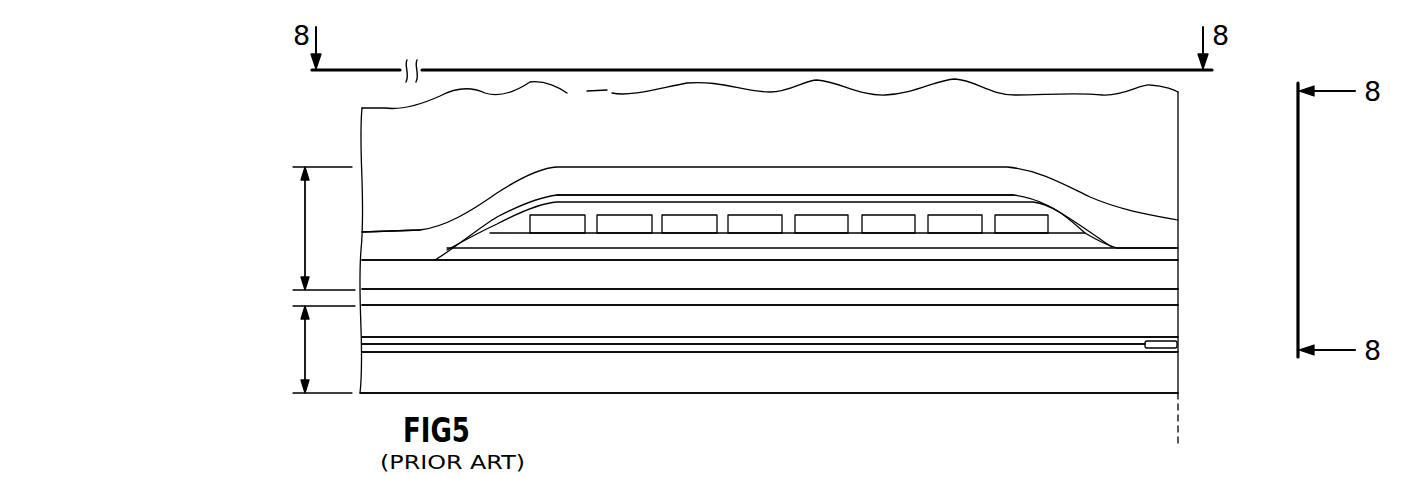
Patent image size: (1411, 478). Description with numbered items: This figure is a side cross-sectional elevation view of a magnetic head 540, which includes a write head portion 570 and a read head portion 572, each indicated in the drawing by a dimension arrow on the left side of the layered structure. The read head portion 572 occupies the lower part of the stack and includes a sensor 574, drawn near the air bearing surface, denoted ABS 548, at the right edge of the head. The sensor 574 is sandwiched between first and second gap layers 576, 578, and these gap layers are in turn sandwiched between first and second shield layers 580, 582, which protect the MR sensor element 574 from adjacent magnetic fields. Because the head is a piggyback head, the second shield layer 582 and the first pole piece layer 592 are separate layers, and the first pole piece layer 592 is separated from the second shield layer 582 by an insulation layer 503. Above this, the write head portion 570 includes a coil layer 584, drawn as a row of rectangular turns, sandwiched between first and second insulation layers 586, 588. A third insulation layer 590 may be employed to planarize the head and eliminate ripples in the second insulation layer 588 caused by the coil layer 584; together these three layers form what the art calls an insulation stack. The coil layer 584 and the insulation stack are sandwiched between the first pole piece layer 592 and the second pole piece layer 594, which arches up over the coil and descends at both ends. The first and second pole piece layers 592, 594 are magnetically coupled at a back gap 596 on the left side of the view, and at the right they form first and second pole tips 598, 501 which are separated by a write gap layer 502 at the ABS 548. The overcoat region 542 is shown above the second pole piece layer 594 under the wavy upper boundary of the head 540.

The magnetic head 540 is at (345, 122).
The overcoat layer 542 is at (1163, 118).
The air bearing surface (ABS) 548 is at (1178, 440).
The write head portion 570 is at (305, 233).
The read head portion 572 is at (305, 353).
The sensor 574 is at (1178, 345).
The first gap layer 576 is at (837, 353).
The second gap layer 578 is at (807, 337).
The first shield layer 580 is at (966, 377).
The second shield layer 582 is at (1032, 323).
The coil layer 584 is at (818, 220).
The first insulation layer 586 is at (727, 242).
The second insulation layer 588 is at (1062, 223).
The third insulation layer 590 is at (598, 198).
The first pole piece layer 592 is at (1095, 280).
The second pole piece layer 594 is at (958, 178).
The back gap 596 is at (398, 230).
The first pole tip 598 is at (1178, 280).
The second pole tip 501 is at (1170, 234).
The write gap layer 502 is at (1178, 251).
The insulation layer 503 is at (655, 302).